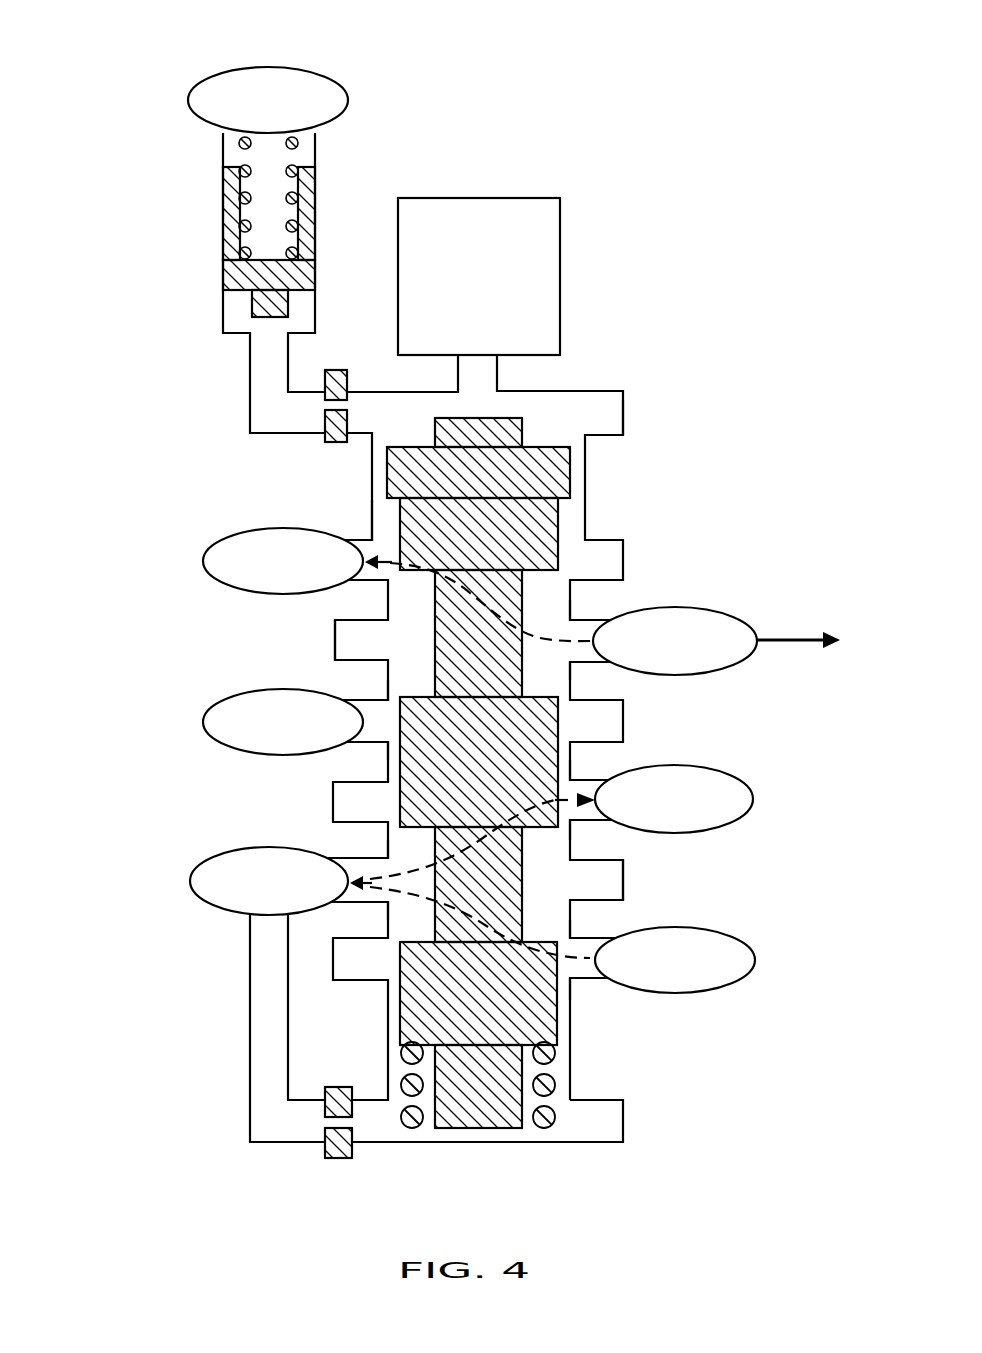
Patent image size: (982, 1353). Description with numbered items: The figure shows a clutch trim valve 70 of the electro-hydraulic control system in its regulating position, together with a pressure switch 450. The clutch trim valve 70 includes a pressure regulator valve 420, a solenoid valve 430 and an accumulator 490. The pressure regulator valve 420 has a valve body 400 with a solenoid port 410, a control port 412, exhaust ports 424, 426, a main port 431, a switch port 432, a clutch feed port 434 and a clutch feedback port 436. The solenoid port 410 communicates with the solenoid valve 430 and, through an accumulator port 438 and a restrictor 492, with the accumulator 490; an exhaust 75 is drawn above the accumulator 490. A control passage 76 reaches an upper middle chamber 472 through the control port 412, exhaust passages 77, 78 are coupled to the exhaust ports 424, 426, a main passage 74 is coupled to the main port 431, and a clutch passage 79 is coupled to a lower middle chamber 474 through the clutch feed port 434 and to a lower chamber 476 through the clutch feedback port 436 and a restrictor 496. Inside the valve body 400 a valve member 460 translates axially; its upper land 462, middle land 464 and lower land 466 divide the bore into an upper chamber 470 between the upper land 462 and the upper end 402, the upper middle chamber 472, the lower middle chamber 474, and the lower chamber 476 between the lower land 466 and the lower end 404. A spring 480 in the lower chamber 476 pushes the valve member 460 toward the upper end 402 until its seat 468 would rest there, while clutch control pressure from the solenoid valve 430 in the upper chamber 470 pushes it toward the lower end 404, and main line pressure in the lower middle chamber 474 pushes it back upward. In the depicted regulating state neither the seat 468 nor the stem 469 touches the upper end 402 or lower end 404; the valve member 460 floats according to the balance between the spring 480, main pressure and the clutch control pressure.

The clutch trim valve 70 is at (545, 140).
The exhaust 75 is at (288, 69).
The accumulator 490 is at (166, 211).
The restrictor 492 is at (334, 368).
The accumulator port 438 is at (365, 422).
The upper end of the valve bore 402 is at (386, 392).
The solenoid port 410 is at (490, 374).
The solenoid valve 430 is at (461, 330).
The valve body 400 is at (572, 1028).
The lower chamber 476 is at (612, 1122).
The lower end of the valve bore 404 is at (398, 1145).
The seat 468 is at (433, 437).
The upper land 462 is at (572, 472).
The middle land 464 is at (400, 747).
The lower land 466 is at (400, 995).
The stem 469 is at (468, 1130).
The spring 480 is at (556, 1115).
The valve member 460 is at (603, 418).
The upper chamber 470 is at (608, 417).
The pressure regulator valve 420 is at (620, 510).
The exhaust port 424 is at (363, 542).
The exhaust passage 77 is at (203, 561).
The switch port 432 is at (590, 622).
The pressure switch 450 is at (748, 655).
The upper middle chamber 472 is at (350, 640).
The control port 412 is at (375, 718).
The control passage 76 is at (205, 718).
The exhaust port 426 is at (590, 780).
The exhaust passage 78 is at (753, 800).
The clutch feed port 434 is at (355, 868).
The clutch passage 79 is at (192, 881).
The lower middle chamber 474 is at (615, 876).
The main port 431 is at (595, 940).
The main passage 74 is at (756, 960).
The clutch feedback port 436 is at (258, 1120).
The restrictor 496 is at (338, 1087).